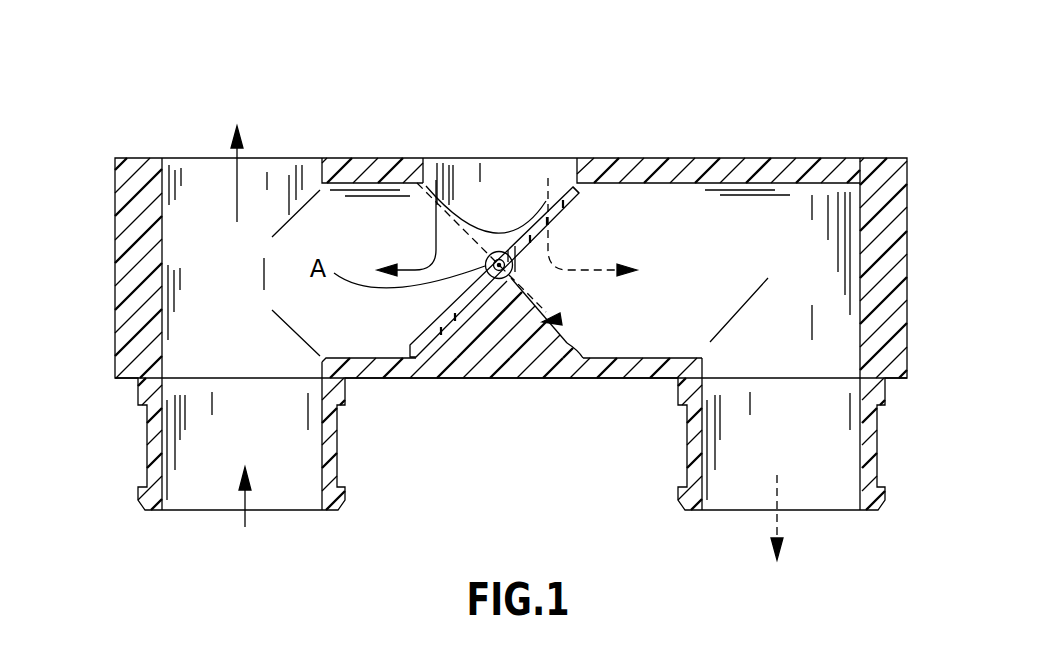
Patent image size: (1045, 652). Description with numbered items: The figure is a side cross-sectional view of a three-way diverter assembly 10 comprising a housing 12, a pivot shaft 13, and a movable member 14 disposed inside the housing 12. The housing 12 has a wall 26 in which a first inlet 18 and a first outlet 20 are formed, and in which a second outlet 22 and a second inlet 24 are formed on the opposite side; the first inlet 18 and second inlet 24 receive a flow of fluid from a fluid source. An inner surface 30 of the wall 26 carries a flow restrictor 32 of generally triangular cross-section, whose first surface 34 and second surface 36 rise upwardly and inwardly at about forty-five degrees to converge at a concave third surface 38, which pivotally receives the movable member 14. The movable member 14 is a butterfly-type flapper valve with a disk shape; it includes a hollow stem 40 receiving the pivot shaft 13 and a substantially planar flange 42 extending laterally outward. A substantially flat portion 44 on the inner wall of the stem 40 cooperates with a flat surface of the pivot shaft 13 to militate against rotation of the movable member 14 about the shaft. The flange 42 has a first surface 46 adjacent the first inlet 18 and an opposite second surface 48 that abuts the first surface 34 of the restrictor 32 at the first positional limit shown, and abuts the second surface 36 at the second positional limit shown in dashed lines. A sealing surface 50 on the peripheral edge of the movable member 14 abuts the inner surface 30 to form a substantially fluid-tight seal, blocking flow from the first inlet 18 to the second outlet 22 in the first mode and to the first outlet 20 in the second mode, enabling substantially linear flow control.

The three-way diverter assembly 10 is at (160, 96).
The housing 12 is at (115, 265).
The pivot shaft 13 is at (497, 252).
The movable member 14 is at (560, 170).
The first inlet 18 is at (437, 145).
The first outlet 20 is at (284, 145).
The second outlet 22 is at (823, 498).
The second inlet 24 is at (289, 490).
The wall 26 is at (818, 168).
The inner surface 30 is at (645, 352).
The flow restrictor 32 is at (562, 320).
The first surface 34 is at (484, 285).
The second surface 36 is at (568, 352).
The third surface 38 is at (498, 280).
The hollow stem 40 is at (516, 264).
The flange 42 is at (447, 321).
The substantially flat portion 44 is at (516, 284).
The first surface 46 is at (512, 228).
The second surface 48 is at (582, 200).
The sealing surface 50 is at (580, 181).